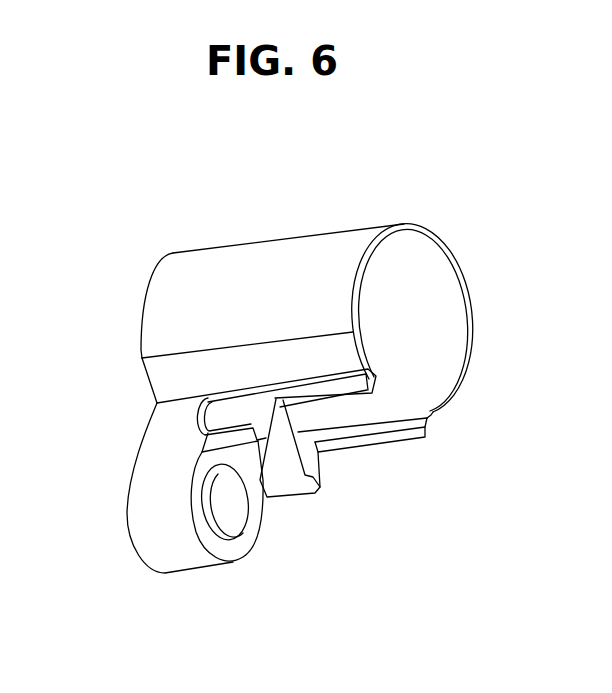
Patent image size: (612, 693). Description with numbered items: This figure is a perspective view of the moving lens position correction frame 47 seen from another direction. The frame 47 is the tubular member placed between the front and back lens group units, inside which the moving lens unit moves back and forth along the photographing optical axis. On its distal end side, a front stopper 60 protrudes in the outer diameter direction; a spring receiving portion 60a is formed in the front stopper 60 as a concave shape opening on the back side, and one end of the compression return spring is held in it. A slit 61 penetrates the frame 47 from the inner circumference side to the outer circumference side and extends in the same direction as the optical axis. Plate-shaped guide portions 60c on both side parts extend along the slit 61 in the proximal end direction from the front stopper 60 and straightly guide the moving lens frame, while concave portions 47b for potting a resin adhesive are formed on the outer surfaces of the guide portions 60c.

The moving lens position correction frame 47 is at (291, 213).
The concave portion 47b is at (226, 417).
The slit 61 is at (358, 430).
The front stopper 60 is at (218, 514).
The spring receiving portion 60a is at (230, 532).
The guide portion 60c is at (209, 450).